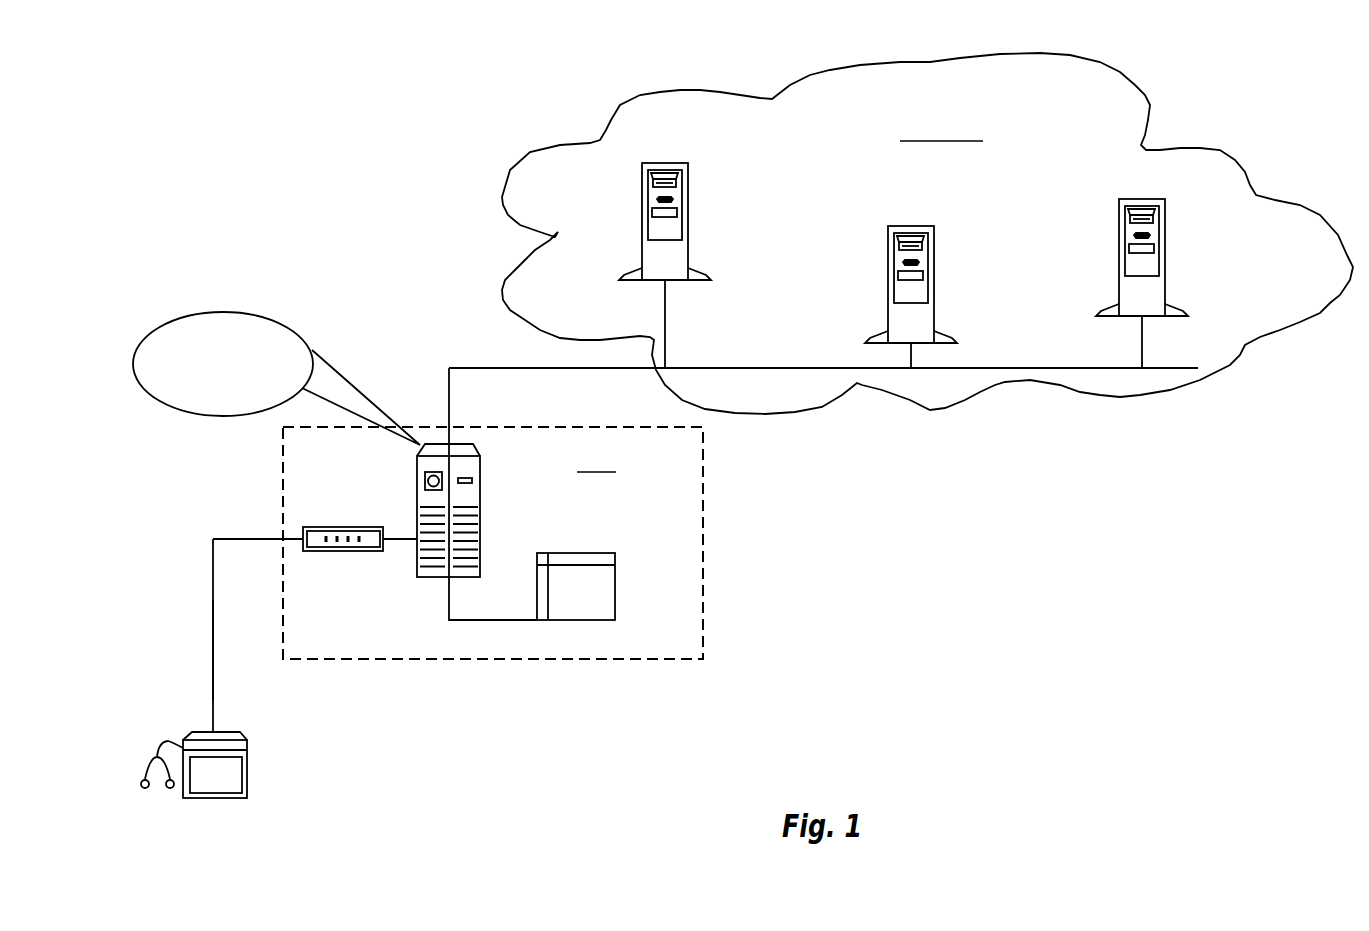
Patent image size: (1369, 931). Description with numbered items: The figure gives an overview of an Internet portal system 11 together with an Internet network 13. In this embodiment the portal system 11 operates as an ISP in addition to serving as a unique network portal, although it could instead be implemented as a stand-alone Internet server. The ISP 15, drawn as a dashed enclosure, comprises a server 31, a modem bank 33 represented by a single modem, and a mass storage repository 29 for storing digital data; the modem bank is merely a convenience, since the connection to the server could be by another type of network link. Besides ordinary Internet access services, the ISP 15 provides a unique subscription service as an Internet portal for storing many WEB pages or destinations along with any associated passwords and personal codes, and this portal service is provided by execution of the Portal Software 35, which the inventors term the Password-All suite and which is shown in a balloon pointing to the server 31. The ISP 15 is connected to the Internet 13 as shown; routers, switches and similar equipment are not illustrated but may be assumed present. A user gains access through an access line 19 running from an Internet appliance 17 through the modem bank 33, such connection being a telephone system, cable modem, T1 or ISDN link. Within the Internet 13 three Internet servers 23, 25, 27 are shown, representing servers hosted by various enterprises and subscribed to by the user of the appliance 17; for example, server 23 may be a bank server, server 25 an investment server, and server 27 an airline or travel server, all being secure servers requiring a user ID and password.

The Internet portal system 11 is at (335, 212).
The Internet network 13 is at (1206, 129).
The ISP 15 is at (703, 590).
The Internet appliance 17 is at (247, 781).
The access line 19 is at (212, 676).
The Internet server 23 is at (697, 237).
The Internet server 25 is at (933, 296).
The Internet server 27 is at (1166, 273).
The mass storage repository 29 is at (615, 598).
The server 31 is at (417, 522).
The modem bank 33 is at (317, 551).
The Portal Software 35 is at (226, 417).